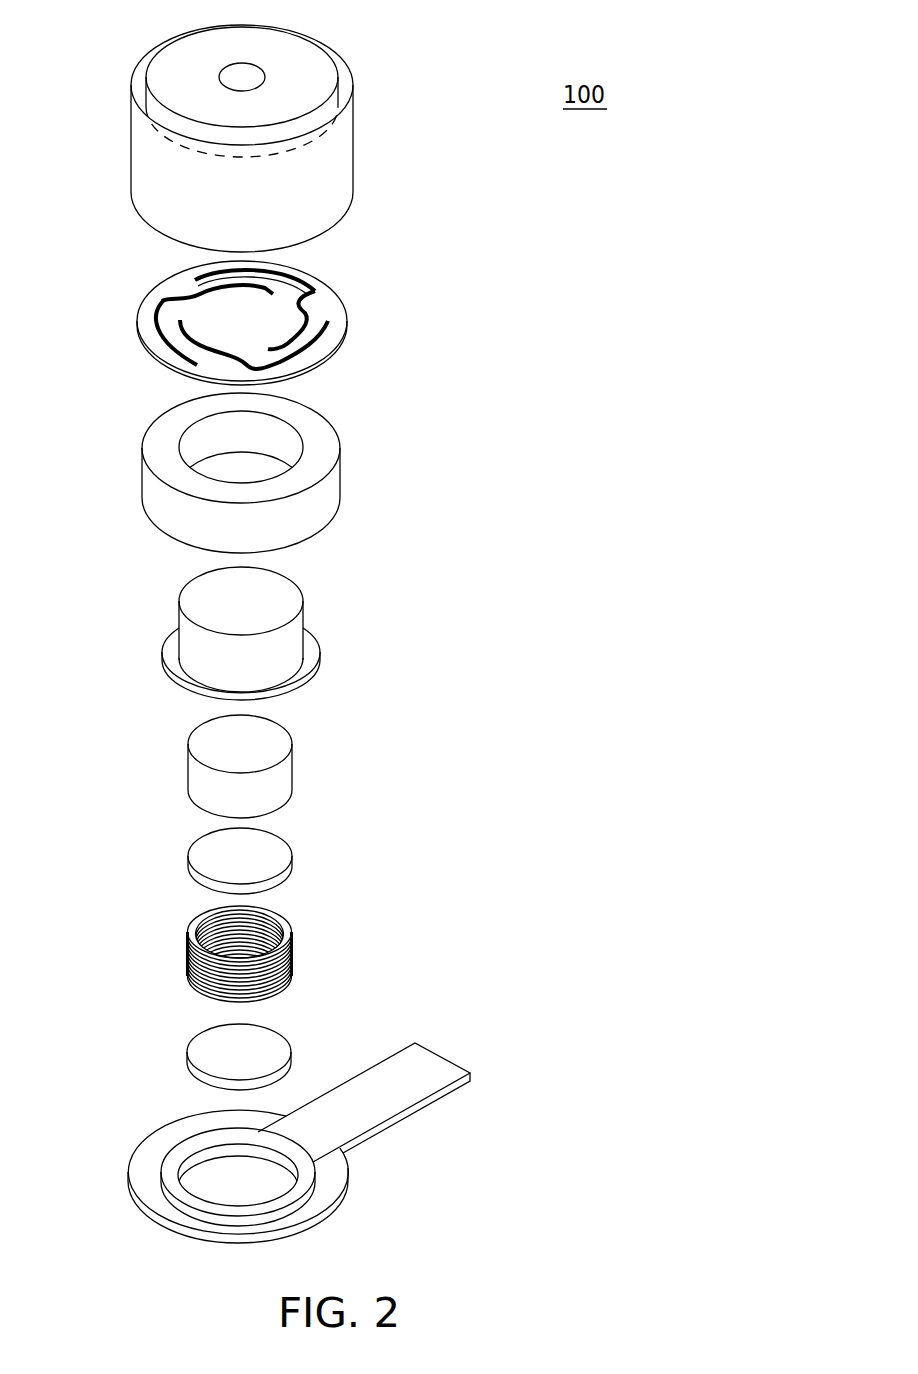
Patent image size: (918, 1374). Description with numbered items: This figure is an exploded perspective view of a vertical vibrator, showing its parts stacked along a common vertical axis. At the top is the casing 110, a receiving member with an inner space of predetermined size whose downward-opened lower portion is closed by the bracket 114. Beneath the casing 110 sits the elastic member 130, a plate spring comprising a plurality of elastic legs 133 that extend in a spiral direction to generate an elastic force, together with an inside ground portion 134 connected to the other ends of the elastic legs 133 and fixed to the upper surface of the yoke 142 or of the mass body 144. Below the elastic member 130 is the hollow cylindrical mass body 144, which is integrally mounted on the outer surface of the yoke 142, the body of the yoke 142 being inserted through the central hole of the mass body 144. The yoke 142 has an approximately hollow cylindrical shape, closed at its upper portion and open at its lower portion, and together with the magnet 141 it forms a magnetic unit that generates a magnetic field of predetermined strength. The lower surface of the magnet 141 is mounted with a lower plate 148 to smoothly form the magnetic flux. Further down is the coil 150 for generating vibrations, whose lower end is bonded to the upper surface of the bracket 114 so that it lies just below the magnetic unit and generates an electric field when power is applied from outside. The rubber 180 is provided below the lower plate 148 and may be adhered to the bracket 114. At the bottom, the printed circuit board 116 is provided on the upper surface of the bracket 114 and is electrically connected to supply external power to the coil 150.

The casing 110 is at (323, 168).
The bracket 114 is at (393, 1098).
The printed circuit board 116 is at (323, 1193).
The elastic member 130 is at (257, 325).
The elastic legs 133 is at (303, 343).
The inside ground portion 134 is at (210, 323).
The magnet 141 is at (270, 780).
The yoke 142 is at (285, 643).
The mass body 144 is at (322, 493).
The lower plate 148 is at (270, 858).
The coil for generating vibrations 150 is at (292, 960).
The rubber 180 is at (277, 1050).